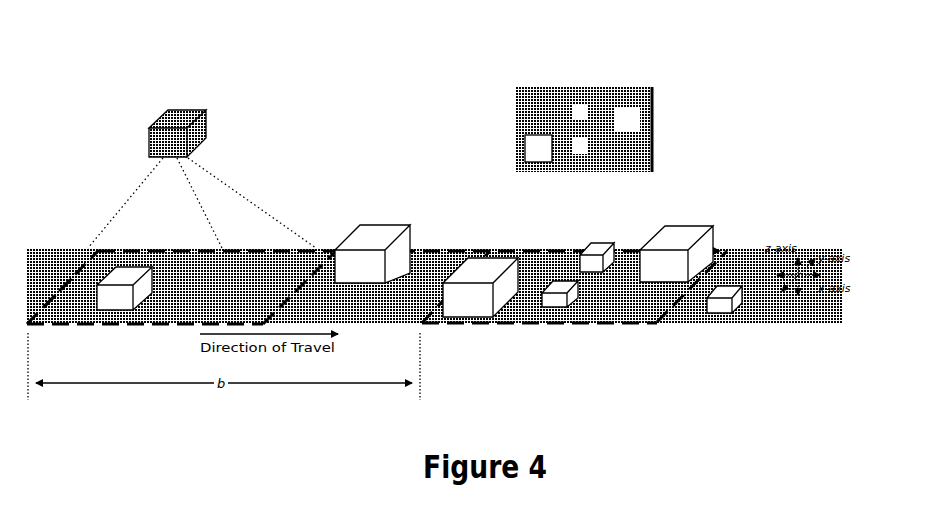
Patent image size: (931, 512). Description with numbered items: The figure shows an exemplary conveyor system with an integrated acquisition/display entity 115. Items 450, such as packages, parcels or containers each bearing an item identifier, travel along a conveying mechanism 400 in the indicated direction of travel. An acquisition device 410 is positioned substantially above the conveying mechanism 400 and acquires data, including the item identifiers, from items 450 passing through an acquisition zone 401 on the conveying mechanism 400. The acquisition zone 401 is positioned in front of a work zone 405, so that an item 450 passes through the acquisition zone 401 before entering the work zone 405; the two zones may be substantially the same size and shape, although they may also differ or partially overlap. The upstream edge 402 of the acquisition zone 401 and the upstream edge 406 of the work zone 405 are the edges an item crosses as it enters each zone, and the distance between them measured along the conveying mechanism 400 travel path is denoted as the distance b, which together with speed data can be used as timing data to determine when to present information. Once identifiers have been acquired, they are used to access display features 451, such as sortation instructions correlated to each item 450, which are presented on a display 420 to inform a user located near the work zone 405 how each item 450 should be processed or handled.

The acquisition/display entity 115 is at (790, 52).
The conveying mechanism 400 is at (748, 250).
The acquisition zone 401 is at (263, 248).
The upstream edge of the acquisition zone 402 is at (68, 288).
The work zone 405 is at (647, 312).
The upstream edge of the work zone 406 is at (459, 366).
The acquisition device 410 is at (167, 109).
The display 420 is at (585, 92).
The item 450 is at (593, 252).
The display feature 451 is at (555, 112).